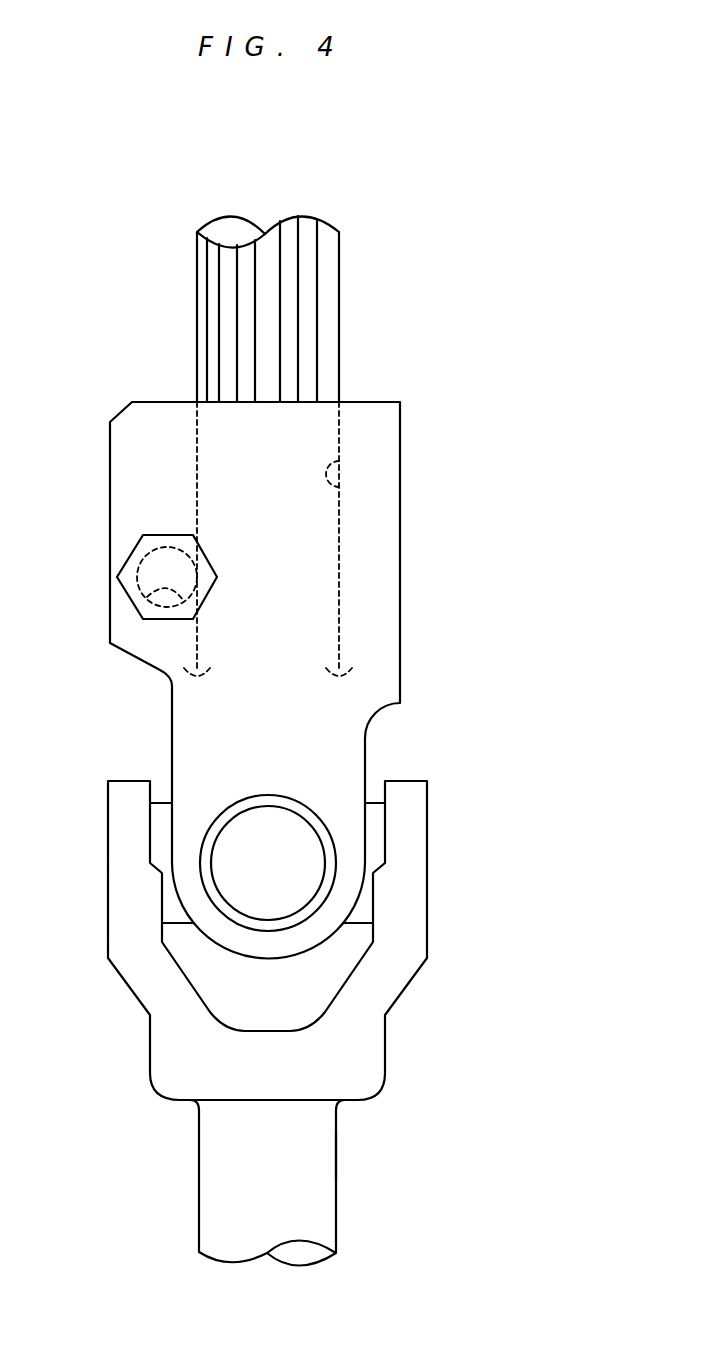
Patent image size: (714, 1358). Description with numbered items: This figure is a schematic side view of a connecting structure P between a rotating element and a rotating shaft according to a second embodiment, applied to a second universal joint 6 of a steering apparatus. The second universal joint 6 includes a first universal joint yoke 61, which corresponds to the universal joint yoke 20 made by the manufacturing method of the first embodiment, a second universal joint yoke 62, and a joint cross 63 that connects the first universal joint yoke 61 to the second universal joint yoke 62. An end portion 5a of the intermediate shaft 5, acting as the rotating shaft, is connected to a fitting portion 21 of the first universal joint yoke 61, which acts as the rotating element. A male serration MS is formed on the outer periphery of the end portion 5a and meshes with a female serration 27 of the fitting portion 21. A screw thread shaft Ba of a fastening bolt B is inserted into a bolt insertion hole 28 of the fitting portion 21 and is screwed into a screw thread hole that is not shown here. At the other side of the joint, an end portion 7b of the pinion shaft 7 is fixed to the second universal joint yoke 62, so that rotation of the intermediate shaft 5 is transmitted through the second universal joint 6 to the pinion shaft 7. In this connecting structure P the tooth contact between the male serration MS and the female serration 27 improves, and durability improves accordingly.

The intermediate shaft 5 is at (271, 309).
The end portion of the intermediate shaft 5a is at (213, 333).
The male serration MS is at (300, 345).
The connecting structure P is at (261, 673).
The fitting portion 21 is at (382, 637).
The female serration 27 is at (341, 483).
The fastening bolt B is at (114, 598).
The screw thread shaft Ba is at (143, 558).
The bolt insertion hole 28 is at (147, 598).
The second universal joint 6 is at (333, 914).
The first universal joint yoke 61 is at (357, 834).
The universal joint yoke 20 is at (488, 786).
The second universal joint yoke 62 is at (403, 990).
The joint cross 63 is at (375, 837).
The pinion shaft 7 is at (300, 1183).
The end portion of the pinion shaft 7b is at (313, 1153).